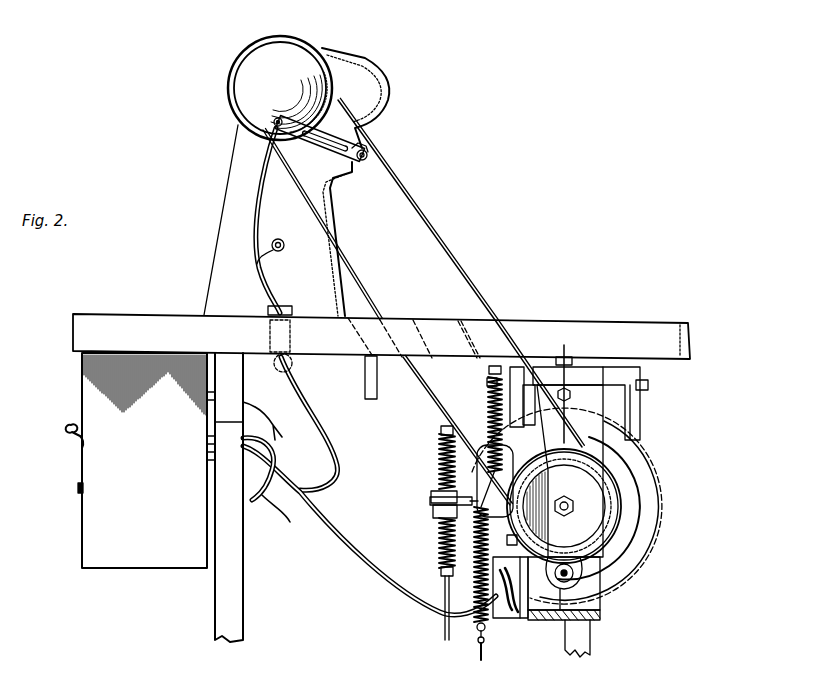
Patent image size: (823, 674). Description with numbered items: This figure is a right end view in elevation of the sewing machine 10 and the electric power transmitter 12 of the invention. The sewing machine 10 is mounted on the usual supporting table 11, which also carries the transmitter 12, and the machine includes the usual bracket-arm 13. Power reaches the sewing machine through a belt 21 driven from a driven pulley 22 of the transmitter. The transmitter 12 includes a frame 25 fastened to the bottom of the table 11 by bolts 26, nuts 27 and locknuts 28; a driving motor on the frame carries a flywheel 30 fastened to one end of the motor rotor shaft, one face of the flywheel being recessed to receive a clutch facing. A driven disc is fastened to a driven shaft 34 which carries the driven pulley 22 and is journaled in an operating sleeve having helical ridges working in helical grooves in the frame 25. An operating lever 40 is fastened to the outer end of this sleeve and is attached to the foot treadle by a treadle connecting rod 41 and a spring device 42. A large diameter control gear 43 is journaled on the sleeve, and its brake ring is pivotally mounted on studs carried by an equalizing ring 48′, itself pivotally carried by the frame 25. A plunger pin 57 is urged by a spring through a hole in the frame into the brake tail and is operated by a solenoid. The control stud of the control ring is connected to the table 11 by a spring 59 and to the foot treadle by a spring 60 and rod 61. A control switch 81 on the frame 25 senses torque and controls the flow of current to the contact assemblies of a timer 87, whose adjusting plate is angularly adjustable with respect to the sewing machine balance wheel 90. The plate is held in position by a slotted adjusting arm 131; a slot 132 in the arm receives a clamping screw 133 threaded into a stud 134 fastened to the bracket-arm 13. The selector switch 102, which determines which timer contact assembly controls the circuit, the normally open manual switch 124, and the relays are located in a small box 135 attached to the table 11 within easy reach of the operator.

The sewing machine 10 is at (220, 198).
The supporting table 11 is at (108, 318).
The electric power transmitter 12 is at (564, 494).
The bracket-arm 13 is at (218, 255).
The belt 21 is at (453, 268).
The driven pulley 22 is at (620, 496).
The frame 25 is at (628, 396).
The bolts 26 is at (572, 424).
The nuts 27 is at (564, 358).
The locknuts 28 is at (570, 405).
The flywheel 30 is at (633, 532).
The driven shaft 34 is at (573, 505).
The operating lever 40 is at (480, 515).
The treadle connecting rod 41 is at (445, 626).
The spring device 42 is at (440, 508).
The control gear 43 is at (640, 580).
The equalizing ring 48′ is at (492, 420).
The plunger pin 57 is at (570, 579).
The spring 59 is at (470, 400).
The spring 60 is at (485, 630).
The rod 61 is at (484, 655).
The control switch 81 is at (548, 622).
The timer 87 is at (225, 93).
The balance wheel 90 is at (258, 78).
The selector switch 102 is at (76, 441).
The manual switch 124 is at (78, 488).
The adjusting arm 131 is at (370, 155).
The slot 132 is at (327, 150).
The clamping screw 133 is at (355, 165).
The stud 134 is at (362, 148).
The box 135 is at (85, 546).